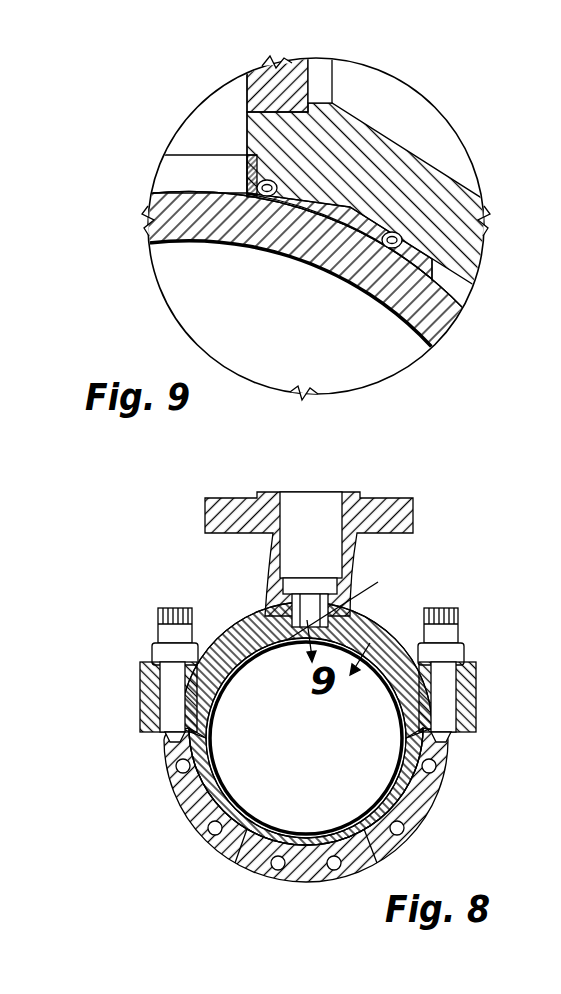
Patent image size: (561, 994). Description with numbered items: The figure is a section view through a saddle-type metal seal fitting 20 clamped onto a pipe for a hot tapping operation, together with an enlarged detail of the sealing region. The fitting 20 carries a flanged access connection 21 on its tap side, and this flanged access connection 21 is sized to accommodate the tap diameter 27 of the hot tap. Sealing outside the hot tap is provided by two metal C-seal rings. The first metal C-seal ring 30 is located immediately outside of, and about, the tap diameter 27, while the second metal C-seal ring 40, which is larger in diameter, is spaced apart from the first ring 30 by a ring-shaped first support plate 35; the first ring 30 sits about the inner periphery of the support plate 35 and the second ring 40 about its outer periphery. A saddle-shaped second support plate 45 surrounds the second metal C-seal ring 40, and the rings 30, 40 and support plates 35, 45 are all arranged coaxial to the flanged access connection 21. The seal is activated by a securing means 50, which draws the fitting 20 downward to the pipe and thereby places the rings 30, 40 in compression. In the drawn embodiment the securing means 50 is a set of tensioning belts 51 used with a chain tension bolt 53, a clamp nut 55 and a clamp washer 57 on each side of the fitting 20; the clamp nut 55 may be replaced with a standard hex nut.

In FIG. 8, the metal seal fitting 20 is at (237, 615).
In FIG. 8, the flanged access connection 21 is at (208, 507).
In FIG. 9, the tap diameter 27 is at (207, 172).
In FIG. 9, the first metal C-seal ring 30 is at (271, 196).
In FIG. 9, the first support plate 35 is at (328, 212).
In FIG. 9, the second metal C-seal ring 40 is at (390, 250).
In FIG. 9, the second support plate 45 is at (433, 283).
In FIG. 8, the securing means 50 is at (178, 823).
In FIG. 8, the tensioning belts 51 is at (232, 858).
In FIG. 8, the chain tension bolt 53 is at (172, 688).
In FIG. 8, the clamp nut 55 is at (160, 613).
In FIG. 8, the clamp washer 57 is at (168, 655).